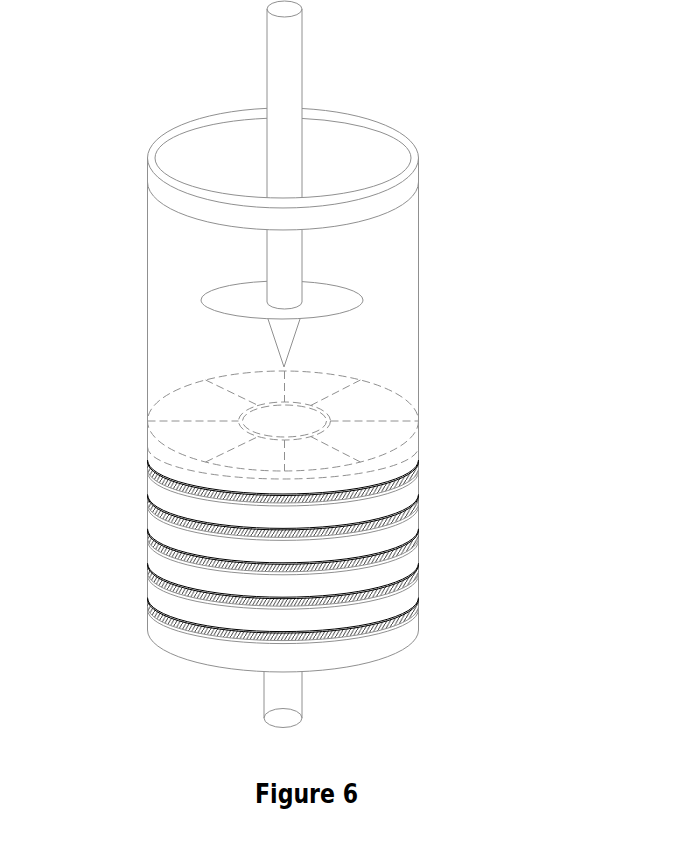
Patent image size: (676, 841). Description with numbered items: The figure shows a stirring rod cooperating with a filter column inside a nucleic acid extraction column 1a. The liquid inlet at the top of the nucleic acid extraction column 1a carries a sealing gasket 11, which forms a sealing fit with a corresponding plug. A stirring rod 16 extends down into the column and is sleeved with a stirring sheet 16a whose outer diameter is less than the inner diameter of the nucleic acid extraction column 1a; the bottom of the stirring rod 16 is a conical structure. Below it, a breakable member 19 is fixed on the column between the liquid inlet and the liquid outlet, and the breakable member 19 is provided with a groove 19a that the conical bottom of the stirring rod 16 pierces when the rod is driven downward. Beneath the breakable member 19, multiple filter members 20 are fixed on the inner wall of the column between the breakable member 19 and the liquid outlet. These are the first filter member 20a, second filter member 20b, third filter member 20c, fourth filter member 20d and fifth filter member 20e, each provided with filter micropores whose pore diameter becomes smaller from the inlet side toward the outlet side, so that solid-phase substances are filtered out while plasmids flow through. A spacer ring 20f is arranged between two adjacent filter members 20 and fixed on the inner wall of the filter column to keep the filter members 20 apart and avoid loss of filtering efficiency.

The nucleic acid extraction column 1a is at (419, 288).
The sealing gasket 11 is at (342, 130).
The stirring rod 16 is at (281, 83).
The stirring sheet 16a is at (307, 295).
The breakable member 19 is at (296, 411).
The groove 19a is at (230, 449).
The filter member 20 is at (303, 536).
The first filter member 20a is at (150, 468).
The second filter member 20b is at (417, 505).
The third filter member 20c is at (417, 538).
The fourth filter member 20d is at (417, 572).
The fifth filter member 20e is at (417, 605).
The spacer ring 20f is at (193, 572).